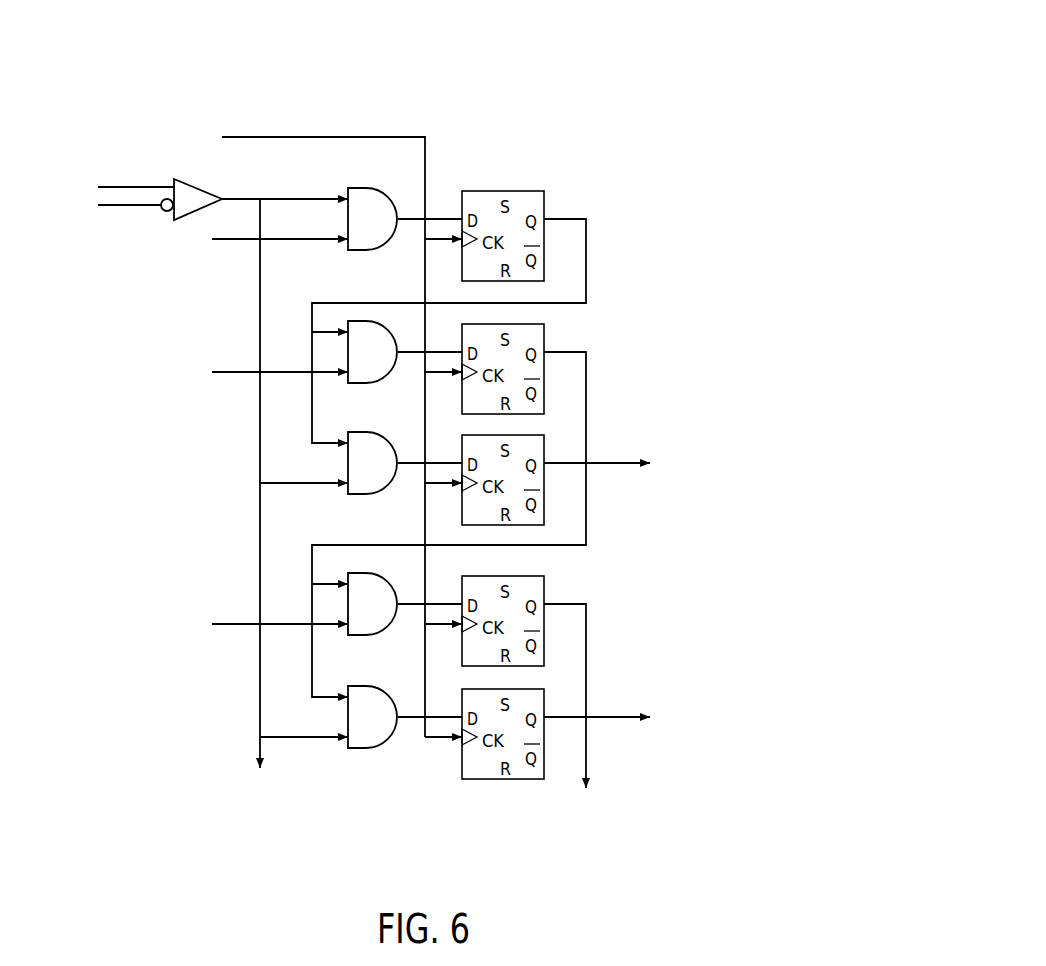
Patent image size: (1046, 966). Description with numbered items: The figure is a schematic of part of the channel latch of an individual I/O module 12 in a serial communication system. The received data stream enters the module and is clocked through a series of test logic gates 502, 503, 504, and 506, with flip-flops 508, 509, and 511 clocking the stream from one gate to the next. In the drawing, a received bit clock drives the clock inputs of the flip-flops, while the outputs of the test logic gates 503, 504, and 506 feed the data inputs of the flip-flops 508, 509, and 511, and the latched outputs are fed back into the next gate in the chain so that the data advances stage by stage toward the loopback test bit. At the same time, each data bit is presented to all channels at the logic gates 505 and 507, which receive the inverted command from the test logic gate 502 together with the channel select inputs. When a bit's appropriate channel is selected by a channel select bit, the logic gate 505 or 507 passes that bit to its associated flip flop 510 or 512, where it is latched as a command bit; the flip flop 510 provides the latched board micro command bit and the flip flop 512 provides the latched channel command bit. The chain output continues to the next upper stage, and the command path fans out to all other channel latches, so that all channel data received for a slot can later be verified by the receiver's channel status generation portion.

The I/O module 12 is at (702, 61).
The test logic gate 502 is at (189, 179).
The test logic gate 503 is at (385, 189).
The test logic gate 504 is at (375, 321).
The logic gate 505 is at (378, 432).
The test logic gate 506 is at (396, 590).
The logic gate 507 is at (383, 689).
The flip-flop 508 is at (546, 202).
The flip-flop 509 is at (546, 334).
The flip flop 510 is at (528, 437).
The flip-flop 511 is at (546, 590).
The flip flop 512 is at (546, 689).